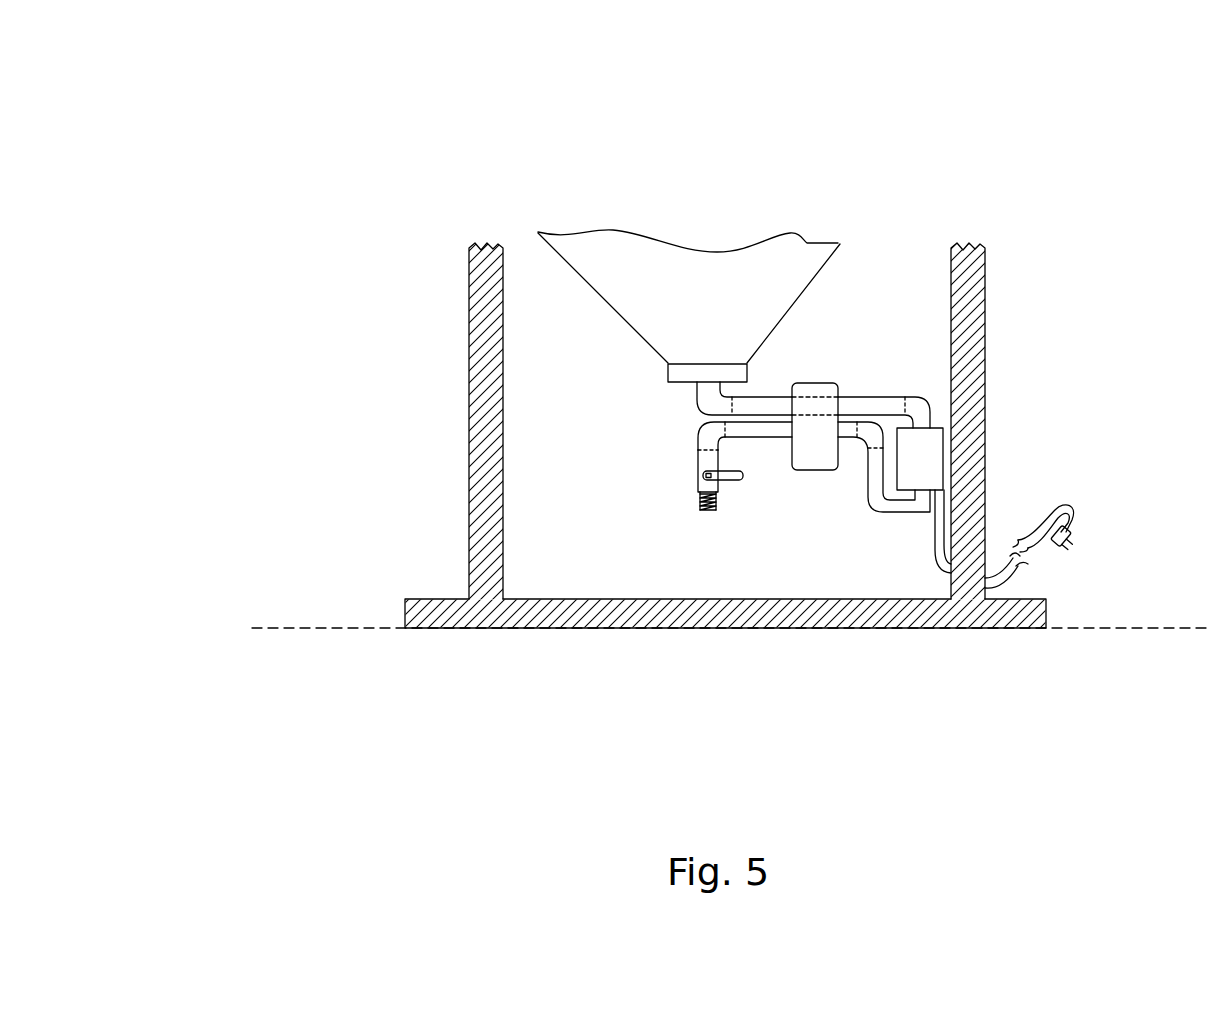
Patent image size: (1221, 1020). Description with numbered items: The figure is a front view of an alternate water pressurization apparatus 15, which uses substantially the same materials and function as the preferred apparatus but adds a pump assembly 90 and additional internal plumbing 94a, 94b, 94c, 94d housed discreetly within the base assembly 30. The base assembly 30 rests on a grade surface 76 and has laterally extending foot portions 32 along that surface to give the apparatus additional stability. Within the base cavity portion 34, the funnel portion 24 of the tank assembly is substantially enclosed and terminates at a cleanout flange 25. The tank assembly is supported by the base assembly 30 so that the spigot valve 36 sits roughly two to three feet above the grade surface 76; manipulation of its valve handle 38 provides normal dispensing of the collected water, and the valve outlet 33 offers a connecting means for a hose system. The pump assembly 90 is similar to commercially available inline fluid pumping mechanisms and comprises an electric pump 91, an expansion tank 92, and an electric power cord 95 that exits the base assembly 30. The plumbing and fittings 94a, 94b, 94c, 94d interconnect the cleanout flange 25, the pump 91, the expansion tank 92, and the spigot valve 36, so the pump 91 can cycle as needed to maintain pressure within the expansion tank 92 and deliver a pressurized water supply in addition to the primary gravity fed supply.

The alternate water pressurization apparatus 15 is at (208, 144).
The funnel portion 24 is at (808, 293).
The cleanout flange 25 is at (665, 373).
The base assembly 30 is at (990, 502).
The foot portions 32 is at (413, 630).
The valve outlet 33 is at (716, 500).
The base cavity portion 34 is at (638, 563).
The spigot valve 36 is at (700, 463).
The valve handle 38 is at (743, 479).
The grade surface 76 is at (302, 628).
The pump assembly 90 is at (926, 382).
The electric pump 91 is at (930, 462).
The expansion tank 92 is at (817, 382).
The internal plumbing 94a is at (694, 400).
The internal plumbing 94b is at (871, 394).
The internal plumbing 94c is at (872, 456).
The internal plumbing 94d is at (697, 436).
The electric power cord 95 is at (935, 547).